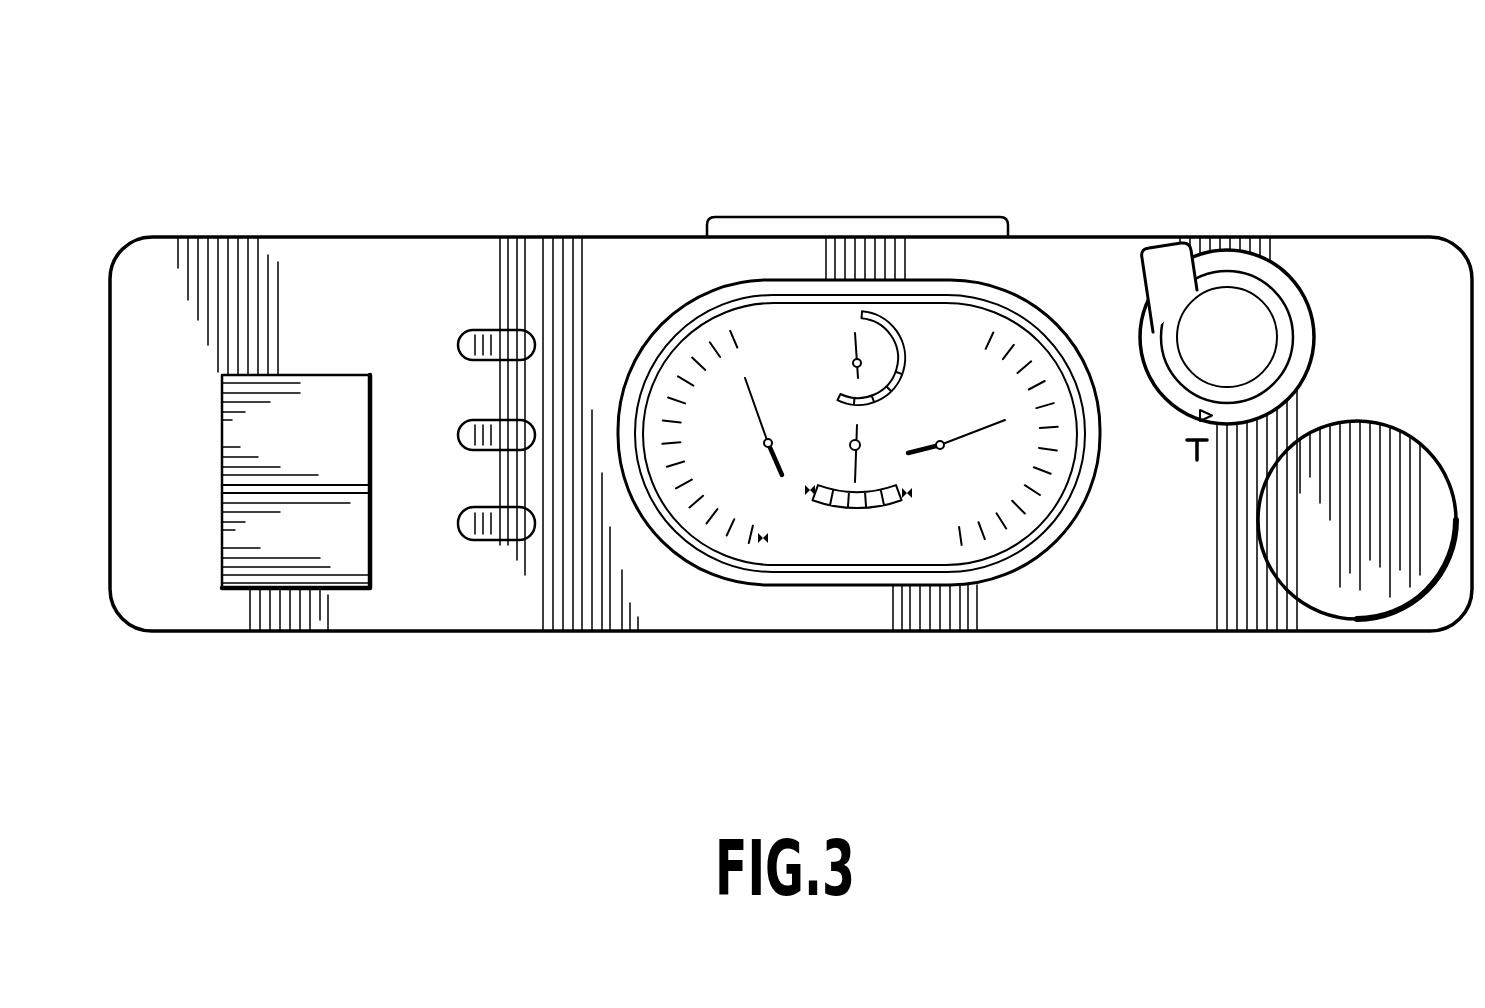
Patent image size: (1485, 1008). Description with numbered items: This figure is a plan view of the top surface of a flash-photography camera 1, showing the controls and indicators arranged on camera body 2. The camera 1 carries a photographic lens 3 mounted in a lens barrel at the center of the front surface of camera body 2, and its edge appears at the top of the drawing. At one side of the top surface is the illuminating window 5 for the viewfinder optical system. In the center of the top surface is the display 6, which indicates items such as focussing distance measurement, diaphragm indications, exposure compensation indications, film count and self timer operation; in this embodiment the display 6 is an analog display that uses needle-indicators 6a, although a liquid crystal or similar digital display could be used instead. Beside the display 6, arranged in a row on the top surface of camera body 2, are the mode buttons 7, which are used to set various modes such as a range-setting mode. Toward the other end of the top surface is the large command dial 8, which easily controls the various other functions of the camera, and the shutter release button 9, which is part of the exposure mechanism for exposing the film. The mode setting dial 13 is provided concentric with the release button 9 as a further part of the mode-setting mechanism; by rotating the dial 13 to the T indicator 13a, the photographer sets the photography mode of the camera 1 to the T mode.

The camera 1 is at (814, 176).
The camera body 2 is at (307, 250).
The photographic lens 3 is at (717, 221).
The illuminating window 5 is at (245, 590).
The display 6 is at (937, 325).
The needle-indicators 6a is at (854, 365).
The mode buttons 7 is at (458, 348).
The large command dial 8 is at (1337, 595).
The shutter release button 9 is at (1240, 312).
The mode setting dial 13 is at (1165, 253).
The T indicator 13a is at (1198, 462).